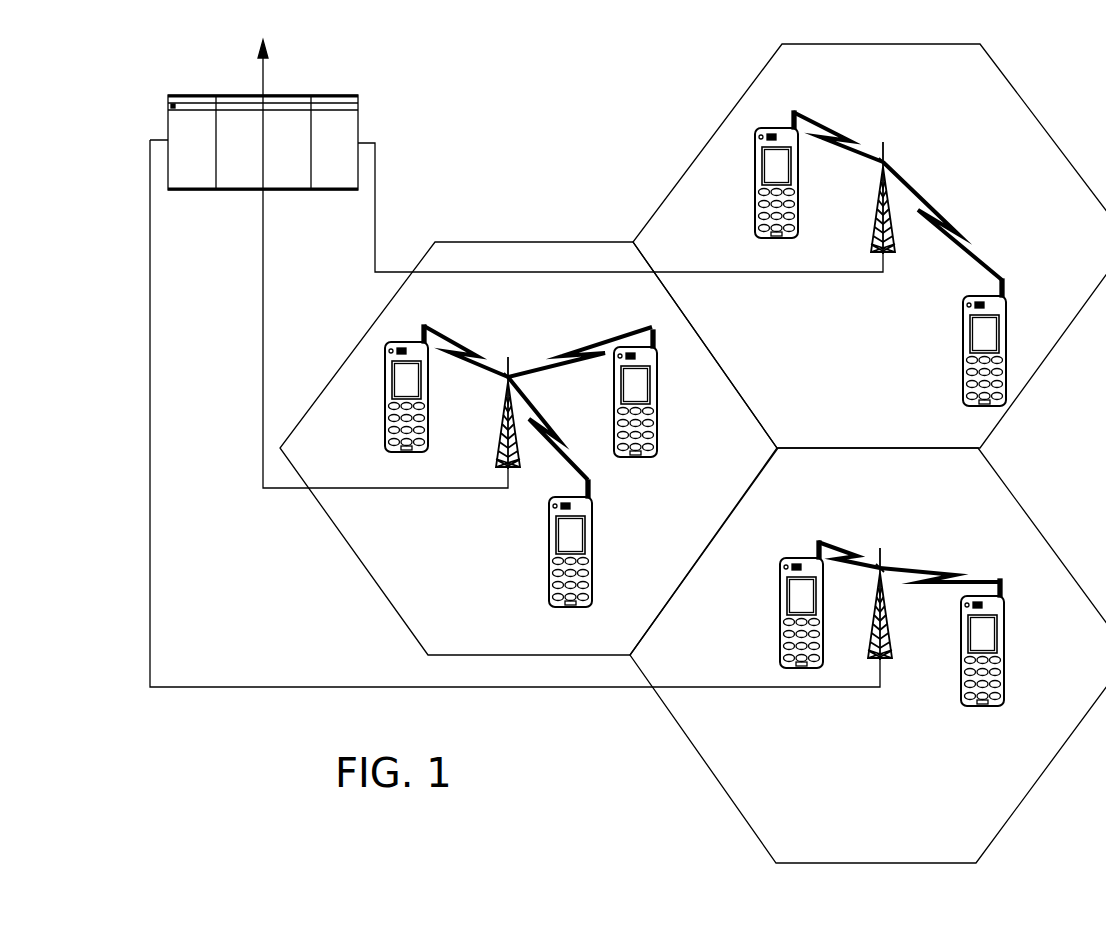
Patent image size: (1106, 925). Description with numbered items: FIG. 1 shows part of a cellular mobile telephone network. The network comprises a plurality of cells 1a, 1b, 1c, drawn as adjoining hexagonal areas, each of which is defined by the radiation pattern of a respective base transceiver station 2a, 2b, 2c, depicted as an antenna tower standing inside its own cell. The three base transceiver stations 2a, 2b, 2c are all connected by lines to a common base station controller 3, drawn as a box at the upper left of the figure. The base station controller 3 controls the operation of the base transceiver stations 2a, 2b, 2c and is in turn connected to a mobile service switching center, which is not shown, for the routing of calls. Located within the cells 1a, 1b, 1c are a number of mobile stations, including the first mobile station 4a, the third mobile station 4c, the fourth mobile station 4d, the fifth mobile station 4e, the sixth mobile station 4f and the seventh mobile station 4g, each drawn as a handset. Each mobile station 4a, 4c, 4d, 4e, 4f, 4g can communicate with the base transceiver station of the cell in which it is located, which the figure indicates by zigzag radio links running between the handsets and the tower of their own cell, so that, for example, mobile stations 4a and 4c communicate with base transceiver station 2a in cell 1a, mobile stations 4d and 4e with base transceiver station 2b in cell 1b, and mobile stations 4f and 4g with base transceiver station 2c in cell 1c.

The cell 1a is at (488, 263).
The cell 1b is at (1020, 132).
The cell 1c is at (1005, 553).
The base transceiver station 2a is at (499, 462).
The base transceiver station 2b is at (873, 228).
The base transceiver station 2c is at (893, 650).
The base station controller 3 is at (333, 143).
The mobile station 4a is at (385, 428).
The mobile station 4c is at (633, 384).
The mobile station 4d is at (755, 172).
The mobile station 4e is at (963, 340).
The mobile station 4f is at (780, 605).
The mobile station 4g is at (985, 635).